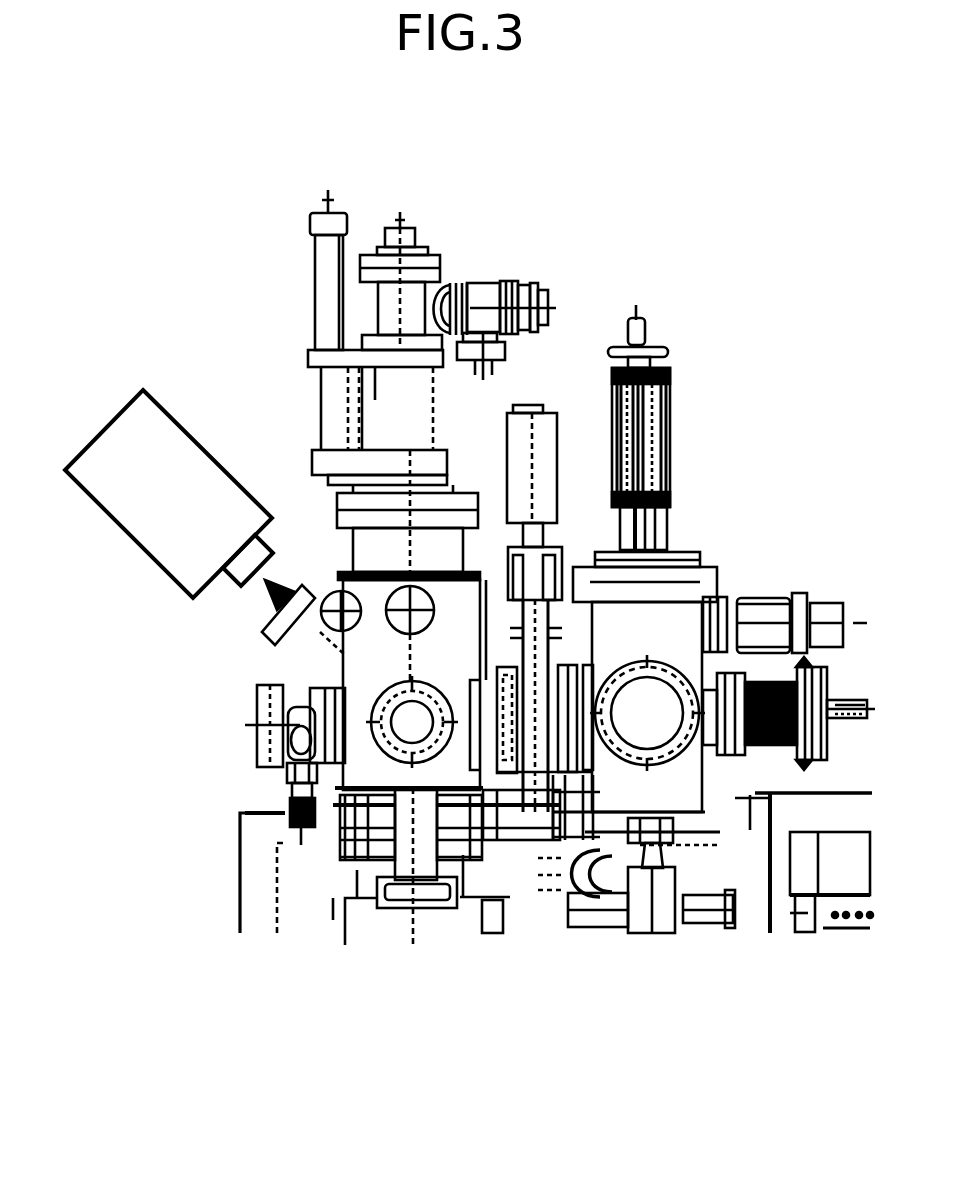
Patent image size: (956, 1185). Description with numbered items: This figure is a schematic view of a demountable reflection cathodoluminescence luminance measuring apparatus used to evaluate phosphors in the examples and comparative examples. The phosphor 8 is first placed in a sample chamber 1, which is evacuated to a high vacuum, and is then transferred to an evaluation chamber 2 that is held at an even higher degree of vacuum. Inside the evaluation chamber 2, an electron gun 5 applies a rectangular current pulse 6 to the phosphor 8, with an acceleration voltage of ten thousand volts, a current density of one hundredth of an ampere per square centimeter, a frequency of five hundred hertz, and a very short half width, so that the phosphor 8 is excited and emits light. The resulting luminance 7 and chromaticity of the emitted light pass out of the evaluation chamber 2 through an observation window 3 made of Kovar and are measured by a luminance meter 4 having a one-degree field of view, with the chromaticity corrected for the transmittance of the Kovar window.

The sample chamber 1 is at (648, 787).
The evaluation chamber 2 is at (360, 875).
The observation window 3 is at (312, 617).
The luminance meter 4 is at (192, 512).
The electron gun 5 is at (392, 390).
The rectangular current pulse 6 is at (413, 533).
The luminance 7 is at (305, 615).
The phosphor 8 is at (423, 750).